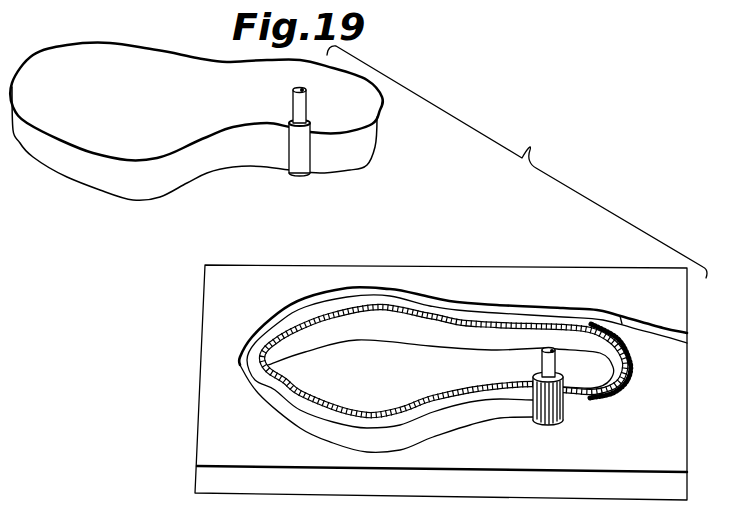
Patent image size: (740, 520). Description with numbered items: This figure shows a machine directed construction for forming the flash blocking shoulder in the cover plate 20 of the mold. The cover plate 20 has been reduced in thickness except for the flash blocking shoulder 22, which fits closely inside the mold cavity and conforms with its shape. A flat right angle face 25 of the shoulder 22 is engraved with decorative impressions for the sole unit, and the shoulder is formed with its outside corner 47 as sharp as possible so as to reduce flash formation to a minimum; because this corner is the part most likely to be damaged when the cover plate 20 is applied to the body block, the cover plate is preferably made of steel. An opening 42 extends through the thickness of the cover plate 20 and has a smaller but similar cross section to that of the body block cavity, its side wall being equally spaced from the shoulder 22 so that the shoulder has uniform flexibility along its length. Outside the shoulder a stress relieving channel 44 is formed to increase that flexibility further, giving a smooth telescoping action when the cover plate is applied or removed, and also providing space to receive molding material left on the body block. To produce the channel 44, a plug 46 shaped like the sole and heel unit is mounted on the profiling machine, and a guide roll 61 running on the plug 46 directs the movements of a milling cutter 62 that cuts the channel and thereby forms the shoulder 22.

The cover plate 20 is at (213, 300).
The flash blocking shoulder 22 is at (263, 367).
The flat right angle face 25 is at (290, 383).
The opening 42 is at (407, 387).
The stress relieving channel 44 is at (292, 320).
The plug 46 is at (195, 68).
The outside corner 47 is at (308, 401).
The guide roll 61 is at (300, 137).
The milling cutter 62 is at (550, 362).